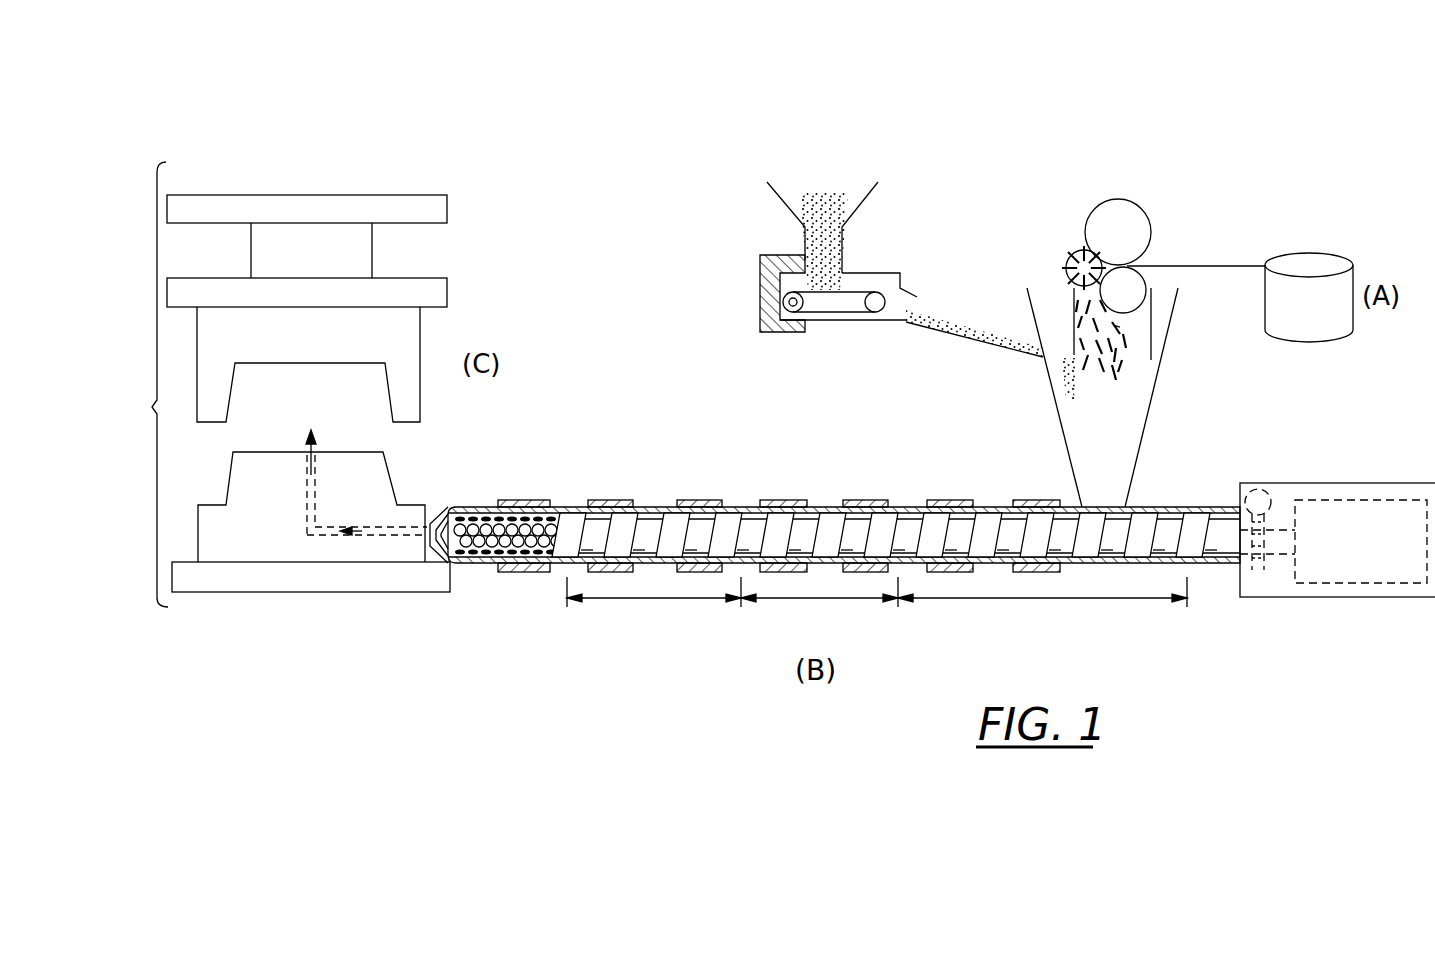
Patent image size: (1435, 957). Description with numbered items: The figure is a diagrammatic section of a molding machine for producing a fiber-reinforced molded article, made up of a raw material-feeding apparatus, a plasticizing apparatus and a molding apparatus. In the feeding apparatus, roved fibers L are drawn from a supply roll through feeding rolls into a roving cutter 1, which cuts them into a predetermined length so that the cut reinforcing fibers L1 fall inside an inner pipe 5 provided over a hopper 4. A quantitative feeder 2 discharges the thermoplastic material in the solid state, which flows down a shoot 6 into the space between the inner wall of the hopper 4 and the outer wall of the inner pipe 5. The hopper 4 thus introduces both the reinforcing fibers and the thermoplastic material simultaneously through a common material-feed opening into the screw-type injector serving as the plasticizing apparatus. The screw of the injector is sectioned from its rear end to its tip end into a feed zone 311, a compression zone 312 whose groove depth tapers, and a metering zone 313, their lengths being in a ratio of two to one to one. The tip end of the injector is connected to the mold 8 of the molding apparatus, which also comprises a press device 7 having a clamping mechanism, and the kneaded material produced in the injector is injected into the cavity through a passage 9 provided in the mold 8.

The roving cutter 1 is at (1074, 230).
The quantitative feeder 2 is at (857, 290).
The hopper 4 is at (1142, 494).
The inner pipe 5 is at (1148, 362).
The shoot 6 is at (952, 345).
The press device 7 is at (372, 240).
The mold 8 is at (393, 335).
The passage 9 is at (378, 537).
The roved fibers L is at (1209, 250).
The cut reinforcing fibers L1 is at (1122, 326).
The feed zone 311 is at (1042, 604).
The compression zone 312 is at (819, 604).
The metering zone 313 is at (654, 604).